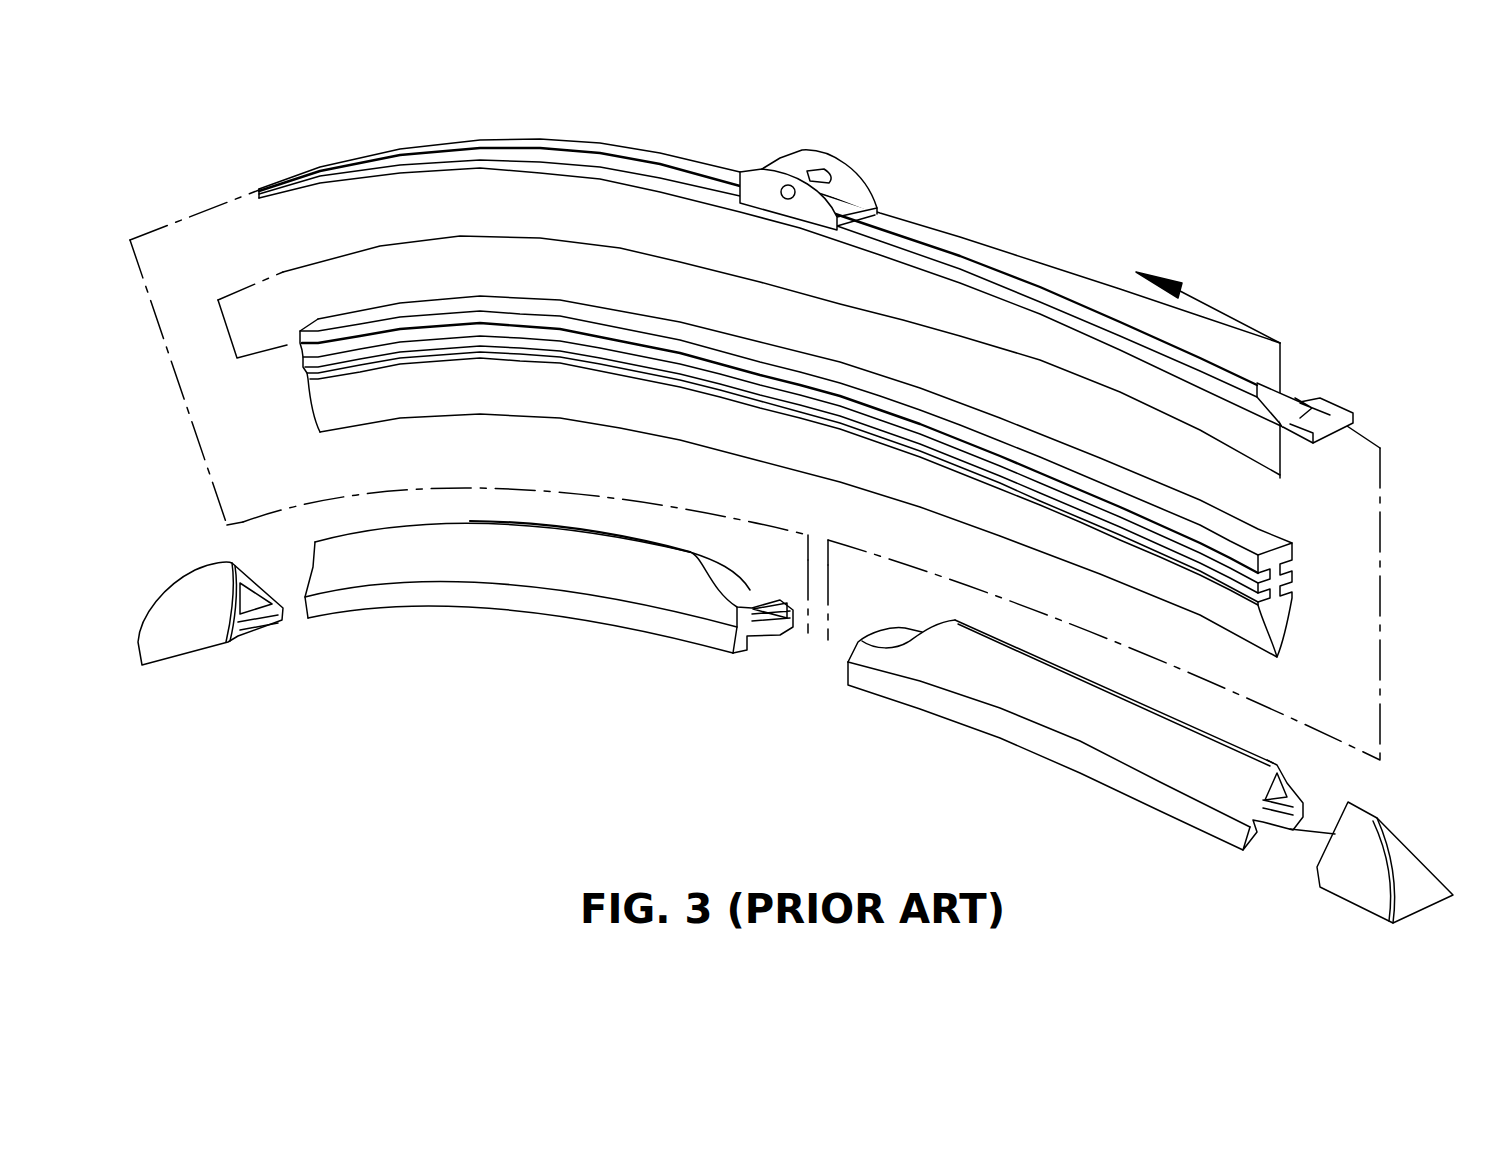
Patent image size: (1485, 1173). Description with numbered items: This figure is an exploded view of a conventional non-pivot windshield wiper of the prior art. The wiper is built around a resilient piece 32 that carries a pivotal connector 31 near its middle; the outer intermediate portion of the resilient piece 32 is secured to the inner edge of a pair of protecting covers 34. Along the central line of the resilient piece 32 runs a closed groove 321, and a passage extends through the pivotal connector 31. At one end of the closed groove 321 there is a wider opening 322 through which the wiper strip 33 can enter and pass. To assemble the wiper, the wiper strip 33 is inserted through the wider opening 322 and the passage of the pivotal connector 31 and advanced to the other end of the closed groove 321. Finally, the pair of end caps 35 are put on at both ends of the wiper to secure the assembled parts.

The pivotal connector 31 is at (838, 165).
The resilient piece 32 is at (937, 238).
The closed groove 321 is at (1108, 318).
The wider opening 322 is at (1292, 385).
The wiper strip 33 is at (975, 452).
The protecting covers 34 is at (474, 597).
The end caps 35 is at (162, 595).